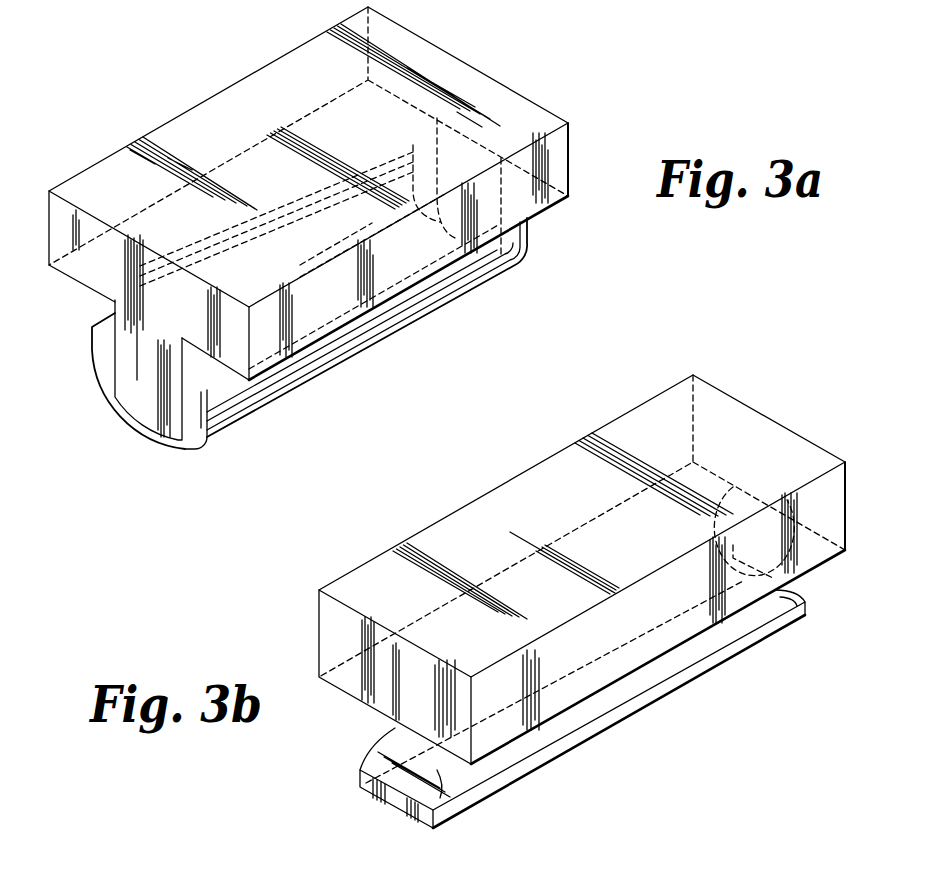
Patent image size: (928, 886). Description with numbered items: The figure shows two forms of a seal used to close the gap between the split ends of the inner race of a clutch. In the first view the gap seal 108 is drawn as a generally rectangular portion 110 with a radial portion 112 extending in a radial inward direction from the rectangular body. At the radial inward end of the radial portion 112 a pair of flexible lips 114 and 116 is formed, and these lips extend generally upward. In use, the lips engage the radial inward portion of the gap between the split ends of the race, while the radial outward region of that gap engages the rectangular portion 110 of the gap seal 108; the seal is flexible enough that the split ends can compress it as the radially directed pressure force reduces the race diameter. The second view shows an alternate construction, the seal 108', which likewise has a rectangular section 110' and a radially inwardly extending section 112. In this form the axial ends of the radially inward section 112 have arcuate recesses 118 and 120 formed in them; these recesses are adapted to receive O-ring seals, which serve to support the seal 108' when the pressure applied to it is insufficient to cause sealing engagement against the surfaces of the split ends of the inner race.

In FIG. 3A, the gap seal 108 is at (321, 193).
In FIG. 3A, the rectangular portion 110 is at (146, 229).
In FIG. 3A, the radial portion 112 is at (147, 390).
In FIG. 3B, the radial portion 112 is at (613, 710).
In FIG. 3A, the flexible lip 114 is at (205, 423).
In FIG. 3A, the flexible lip 116 is at (92, 367).
In FIG. 3B, the seal 108' is at (582, 577).
In FIG. 3B, the rectangular section 110' is at (357, 695).
In FIG. 3B, the arcuate recess 118 is at (447, 760).
In FIG. 3B, the arcuate recess 120 is at (797, 590).